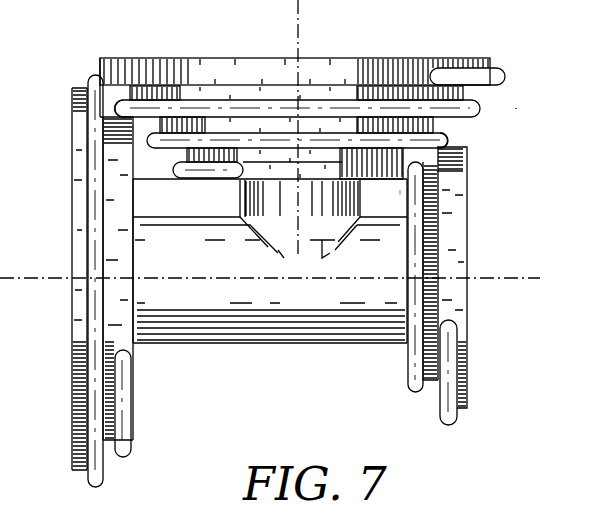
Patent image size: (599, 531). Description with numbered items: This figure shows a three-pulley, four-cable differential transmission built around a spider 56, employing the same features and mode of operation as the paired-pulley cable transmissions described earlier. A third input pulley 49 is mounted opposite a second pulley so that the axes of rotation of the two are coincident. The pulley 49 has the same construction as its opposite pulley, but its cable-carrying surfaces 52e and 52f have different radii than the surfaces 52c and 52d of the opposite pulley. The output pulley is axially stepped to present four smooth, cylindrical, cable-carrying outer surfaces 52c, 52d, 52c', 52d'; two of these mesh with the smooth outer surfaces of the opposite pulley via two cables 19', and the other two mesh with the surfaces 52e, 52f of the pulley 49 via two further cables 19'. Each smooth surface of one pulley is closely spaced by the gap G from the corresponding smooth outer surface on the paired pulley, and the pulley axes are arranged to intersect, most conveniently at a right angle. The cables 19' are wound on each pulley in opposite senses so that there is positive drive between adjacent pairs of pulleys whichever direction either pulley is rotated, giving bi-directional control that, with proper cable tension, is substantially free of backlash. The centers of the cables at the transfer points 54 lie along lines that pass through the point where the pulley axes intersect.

The cable-carrying outer surface 52d' is at (150, 58).
The cable-carrying outer surface 52c' is at (296, 66).
The cable-carrying outer surface 52d is at (283, 146).
The cable-carrying outer surface 52c is at (290, 182).
The cable 19' is at (296, 259).
The transfer point 54 is at (113, 107).
The cable-carrying outer surface 52f is at (71, 147).
The third input pulley 49 is at (72, 218).
The cable-carrying outer surface 52e is at (110, 172).
The gap G is at (131, 118).
The spider 56 is at (238, 343).